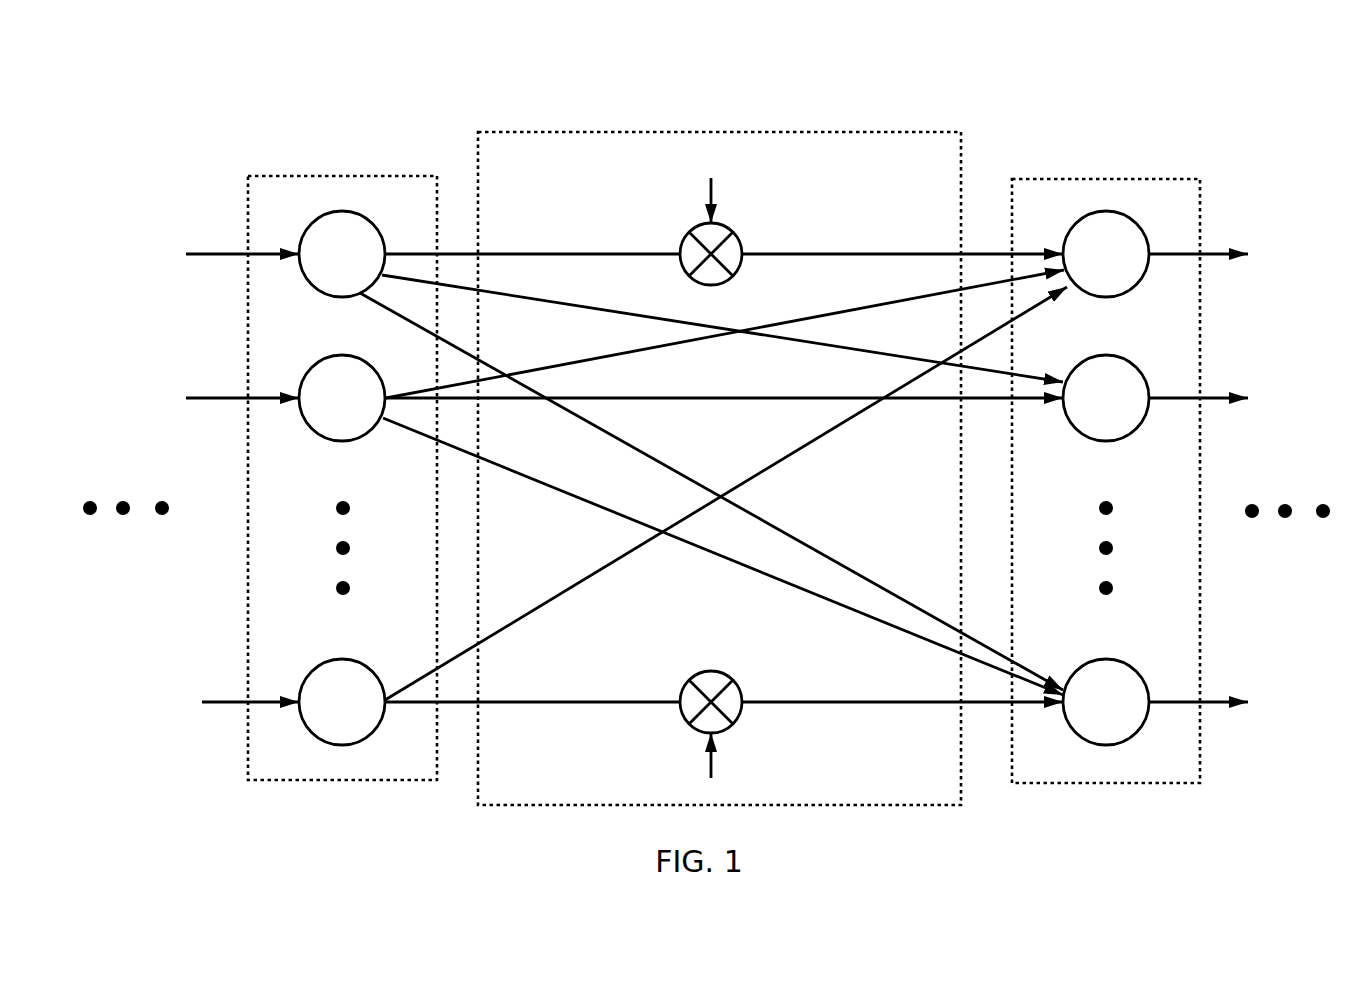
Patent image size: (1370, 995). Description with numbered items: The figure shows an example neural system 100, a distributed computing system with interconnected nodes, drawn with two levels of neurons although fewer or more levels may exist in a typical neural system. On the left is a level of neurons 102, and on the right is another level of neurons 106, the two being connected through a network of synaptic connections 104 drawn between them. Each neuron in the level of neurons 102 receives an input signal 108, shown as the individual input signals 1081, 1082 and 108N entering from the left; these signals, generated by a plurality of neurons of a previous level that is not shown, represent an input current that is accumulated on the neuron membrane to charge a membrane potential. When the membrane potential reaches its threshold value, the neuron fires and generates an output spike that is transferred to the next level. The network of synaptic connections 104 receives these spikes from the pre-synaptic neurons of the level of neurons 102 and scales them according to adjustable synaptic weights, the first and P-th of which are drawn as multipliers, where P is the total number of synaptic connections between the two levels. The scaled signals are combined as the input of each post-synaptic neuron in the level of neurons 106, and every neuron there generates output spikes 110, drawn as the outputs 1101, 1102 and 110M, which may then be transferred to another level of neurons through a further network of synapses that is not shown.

The neural system 100 is at (196, 124).
The level of neurons 102 is at (296, 176).
The network of synaptic connections 104 is at (897, 132).
The level of neurons 106 is at (1088, 179).
The input signal 108 is at (194, 449).
The input signal 1081 is at (162, 215).
The input signal 1082 is at (162, 358).
The input signal 108N is at (160, 682).
The output spikes 110 is at (1253, 453).
The output spike 1101 is at (1288, 218).
The output spike 1102 is at (1288, 360).
The output spike 110M is at (1280, 660).